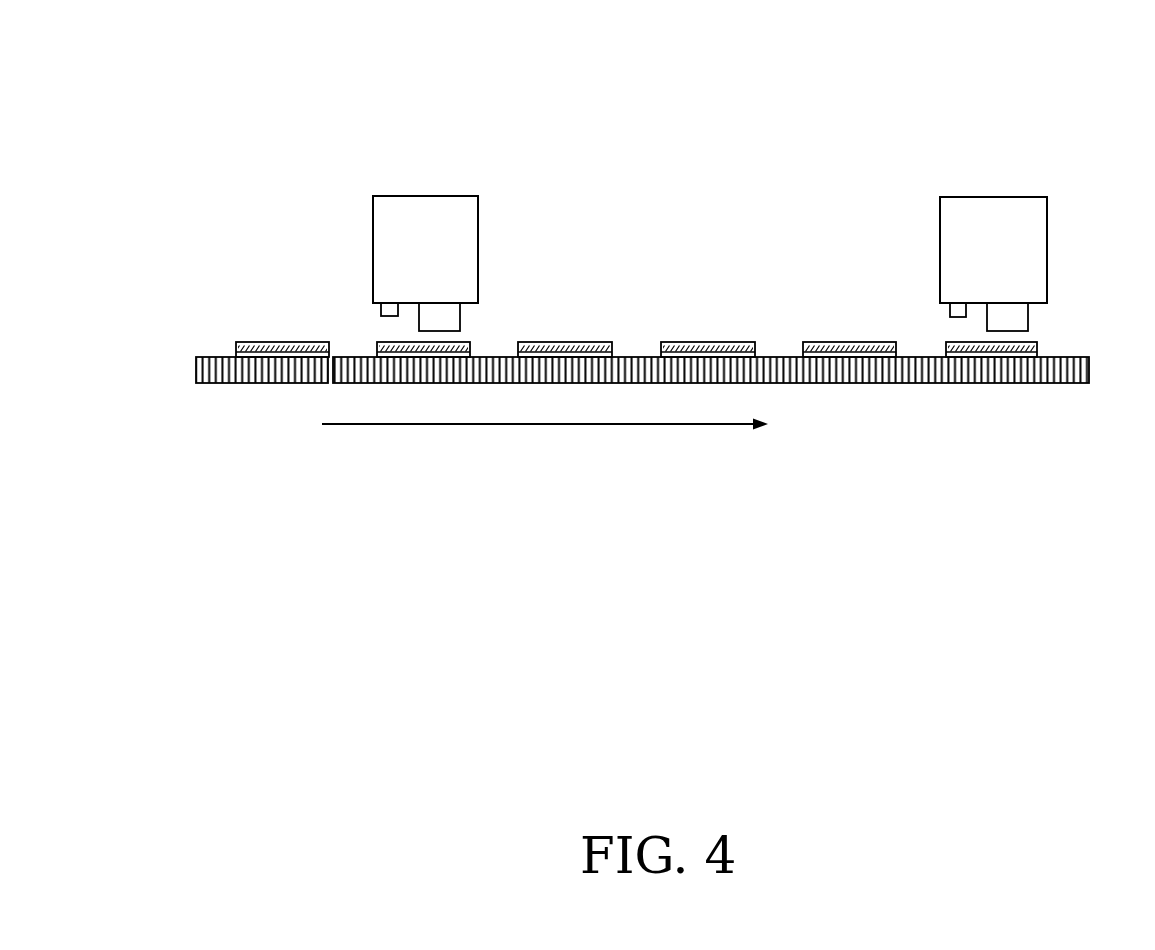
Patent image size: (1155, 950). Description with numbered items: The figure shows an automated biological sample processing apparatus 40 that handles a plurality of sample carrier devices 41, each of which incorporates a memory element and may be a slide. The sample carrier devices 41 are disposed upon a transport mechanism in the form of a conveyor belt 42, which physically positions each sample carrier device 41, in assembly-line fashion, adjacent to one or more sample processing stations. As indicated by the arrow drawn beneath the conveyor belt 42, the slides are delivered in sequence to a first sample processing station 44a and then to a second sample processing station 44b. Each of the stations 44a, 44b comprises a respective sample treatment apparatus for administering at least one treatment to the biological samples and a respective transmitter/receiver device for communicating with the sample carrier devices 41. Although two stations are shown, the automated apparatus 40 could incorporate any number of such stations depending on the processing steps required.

The automated biological sample processing apparatus 40 is at (187, 24).
The sample carrier device 41 is at (243, 342).
The conveyor belt 42 is at (195, 370).
The first sample processing station 44a is at (437, 210).
The second sample processing station 44b is at (1005, 210).